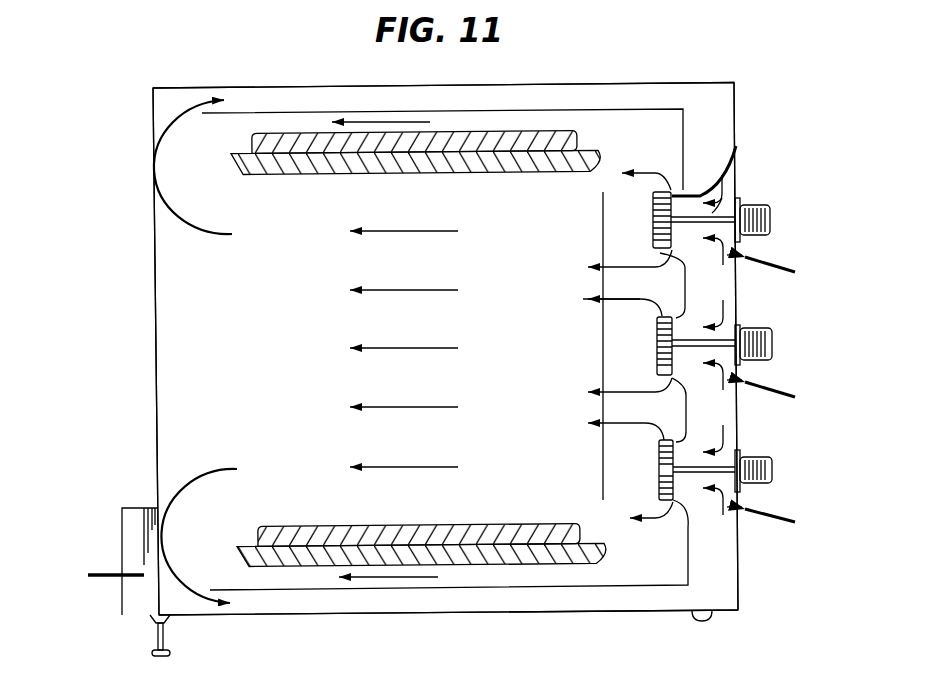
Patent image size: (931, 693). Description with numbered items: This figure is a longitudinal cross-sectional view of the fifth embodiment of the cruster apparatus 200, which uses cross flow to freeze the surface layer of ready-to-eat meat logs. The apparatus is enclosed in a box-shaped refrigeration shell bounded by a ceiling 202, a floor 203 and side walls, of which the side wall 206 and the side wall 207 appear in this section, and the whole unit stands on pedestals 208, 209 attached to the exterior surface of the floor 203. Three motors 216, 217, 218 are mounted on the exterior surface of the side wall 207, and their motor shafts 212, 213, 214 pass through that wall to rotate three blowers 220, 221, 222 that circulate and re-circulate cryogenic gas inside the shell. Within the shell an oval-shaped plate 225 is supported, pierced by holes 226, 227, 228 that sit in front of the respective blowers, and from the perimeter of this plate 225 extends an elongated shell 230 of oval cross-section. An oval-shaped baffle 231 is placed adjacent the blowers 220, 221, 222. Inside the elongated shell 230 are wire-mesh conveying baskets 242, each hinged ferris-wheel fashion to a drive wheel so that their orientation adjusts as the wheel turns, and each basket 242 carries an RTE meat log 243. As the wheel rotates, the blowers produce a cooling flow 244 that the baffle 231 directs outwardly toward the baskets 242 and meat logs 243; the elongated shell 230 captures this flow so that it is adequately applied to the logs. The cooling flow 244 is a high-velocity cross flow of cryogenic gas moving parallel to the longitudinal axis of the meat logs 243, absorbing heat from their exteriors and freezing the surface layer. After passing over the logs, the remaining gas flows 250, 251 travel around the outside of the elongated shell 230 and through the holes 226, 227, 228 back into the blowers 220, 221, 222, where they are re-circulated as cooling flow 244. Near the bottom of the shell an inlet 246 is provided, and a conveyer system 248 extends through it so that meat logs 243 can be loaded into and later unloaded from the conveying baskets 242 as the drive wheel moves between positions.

The cruster apparatus 200 is at (136, 160).
The ceiling 202 is at (278, 86).
The floor 203 is at (433, 612).
The side wall 206 is at (157, 342).
The side wall 207 is at (735, 105).
The pedestal 208 is at (167, 630).
The pedestal 209 is at (714, 622).
The motor shaft 212 is at (717, 190).
The motor shaft 213 is at (657, 320).
The motor shaft 214 is at (659, 446).
The motor 216 is at (772, 218).
The motor 217 is at (772, 340).
The motor 218 is at (772, 470).
The blower 220 is at (736, 146).
The blower 221 is at (690, 391).
The blower 222 is at (690, 527).
The oval-shaped plate 225 is at (687, 122).
The hole 226 is at (688, 243).
The hole 227 is at (675, 312).
The hole 228 is at (674, 436).
The elongated shell 230 is at (622, 110).
The oval-shaped baffle 231 is at (600, 222).
The conveying basket 242 is at (533, 560).
The RTE meat log 243 is at (565, 535).
The cooling flow 244 is at (345, 306).
The inlet 246 is at (100, 538).
The conveyer system 248 is at (98, 574).
The remaining gas flow 250 is at (170, 224).
The remaining gas flow 251 is at (174, 464).